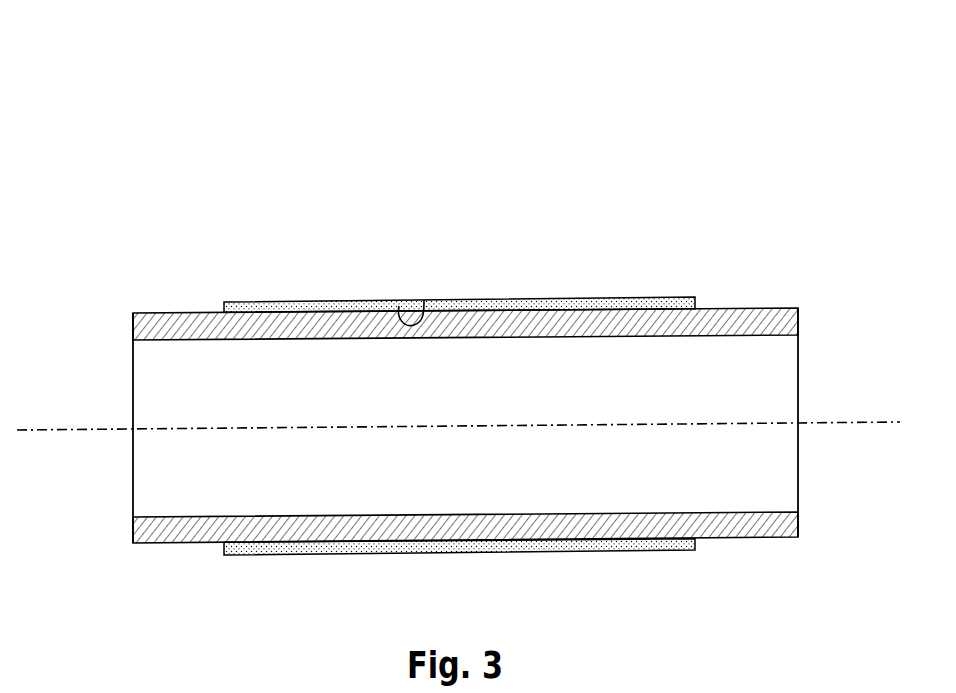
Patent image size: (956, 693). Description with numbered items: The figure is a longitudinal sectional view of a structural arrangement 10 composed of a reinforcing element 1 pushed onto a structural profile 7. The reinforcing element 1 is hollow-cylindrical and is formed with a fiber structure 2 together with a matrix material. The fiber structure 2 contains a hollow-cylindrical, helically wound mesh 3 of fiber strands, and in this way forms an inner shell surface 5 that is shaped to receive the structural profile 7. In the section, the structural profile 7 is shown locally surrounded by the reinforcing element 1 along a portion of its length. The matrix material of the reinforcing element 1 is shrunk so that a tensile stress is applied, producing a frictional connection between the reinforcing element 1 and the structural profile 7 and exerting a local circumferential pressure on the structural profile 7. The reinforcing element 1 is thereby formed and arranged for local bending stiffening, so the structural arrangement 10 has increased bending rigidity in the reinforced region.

The structural arrangement 10 is at (484, 348).
The reinforcing element 1 is at (500, 323).
The fiber structure 2 is at (459, 356).
The mesh 3 is at (600, 298).
The inner shell surface 5 is at (424, 300).
The structural profile 7 is at (772, 320).